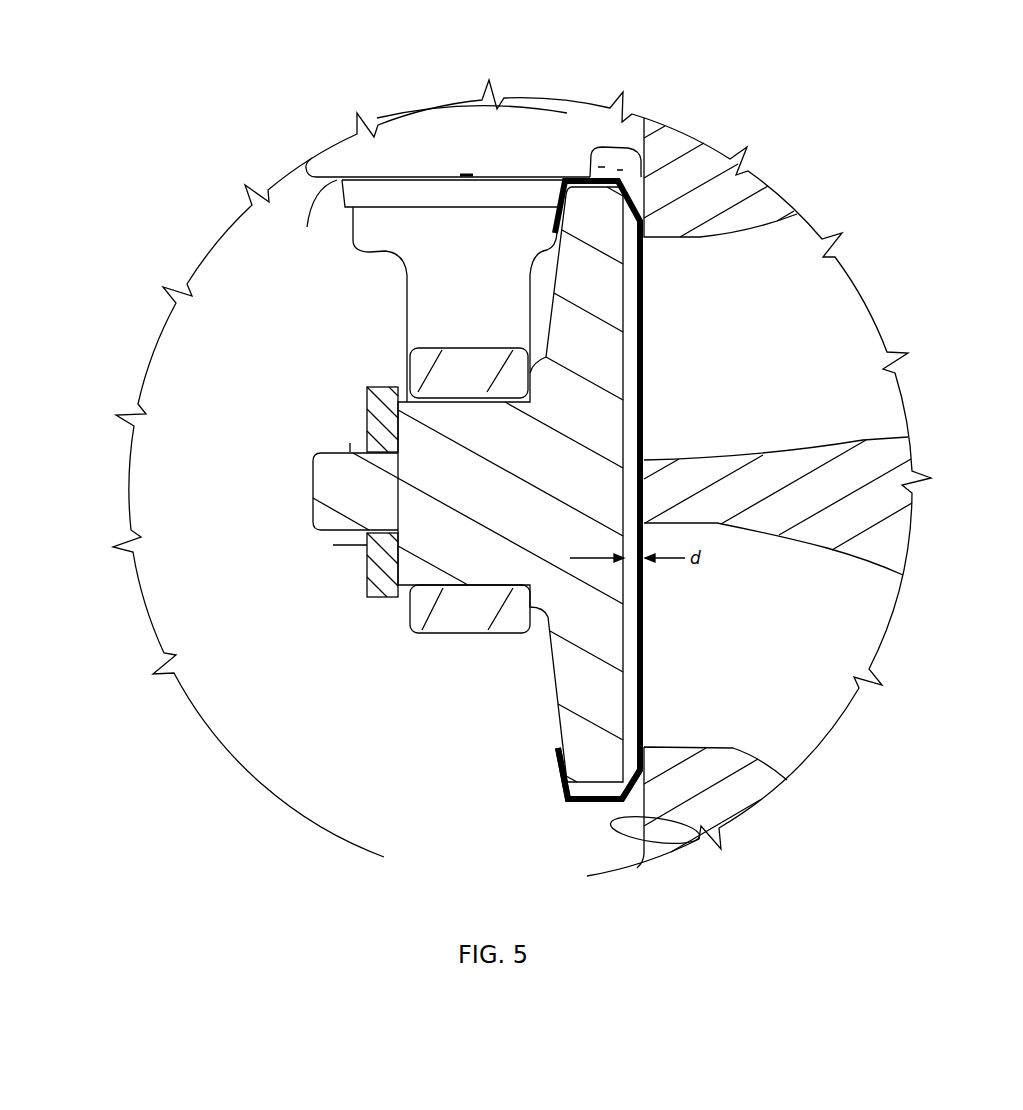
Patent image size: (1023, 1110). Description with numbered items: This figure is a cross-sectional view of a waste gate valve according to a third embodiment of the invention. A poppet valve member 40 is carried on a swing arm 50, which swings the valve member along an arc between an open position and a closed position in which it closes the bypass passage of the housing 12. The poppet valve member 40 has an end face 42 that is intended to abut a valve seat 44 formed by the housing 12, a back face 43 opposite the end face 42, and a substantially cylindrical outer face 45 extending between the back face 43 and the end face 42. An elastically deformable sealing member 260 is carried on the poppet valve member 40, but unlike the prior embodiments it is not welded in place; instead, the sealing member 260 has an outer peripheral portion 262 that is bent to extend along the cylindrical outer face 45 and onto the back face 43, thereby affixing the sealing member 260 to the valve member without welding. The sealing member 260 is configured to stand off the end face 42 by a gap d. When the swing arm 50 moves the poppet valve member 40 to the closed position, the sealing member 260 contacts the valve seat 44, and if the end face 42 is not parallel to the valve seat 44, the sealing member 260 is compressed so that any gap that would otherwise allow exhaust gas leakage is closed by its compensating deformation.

The housing 12 is at (875, 470).
The poppet valve member 40 is at (577, 663).
The end face 42 is at (633, 728).
The back face 43 is at (547, 253).
The valve seat 44 is at (712, 833).
The cylindrical outer face 45 is at (643, 150).
The swing arm 50 is at (473, 277).
The sealing member 260 is at (645, 347).
The outer peripheral portion 262 is at (567, 780).